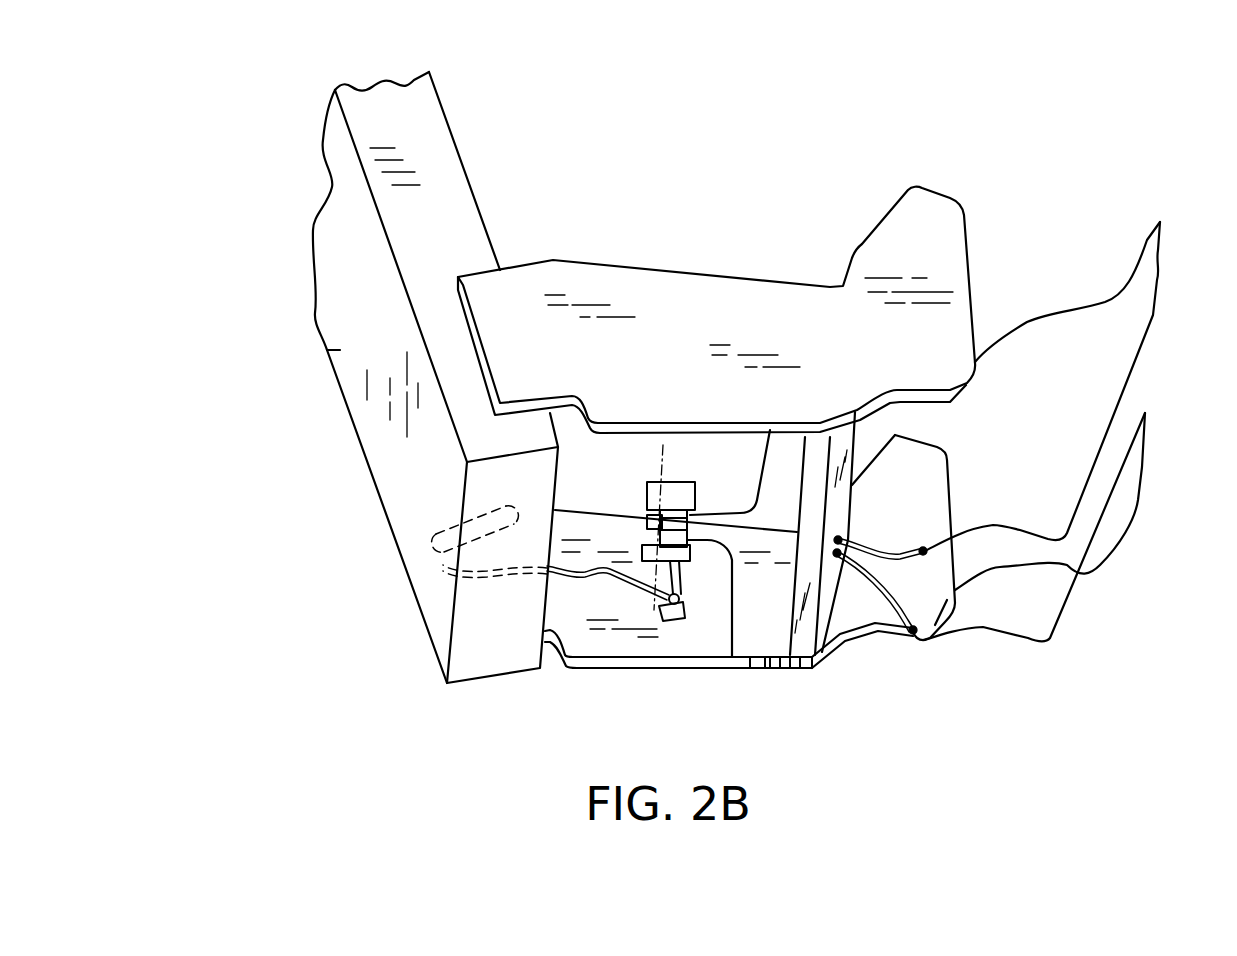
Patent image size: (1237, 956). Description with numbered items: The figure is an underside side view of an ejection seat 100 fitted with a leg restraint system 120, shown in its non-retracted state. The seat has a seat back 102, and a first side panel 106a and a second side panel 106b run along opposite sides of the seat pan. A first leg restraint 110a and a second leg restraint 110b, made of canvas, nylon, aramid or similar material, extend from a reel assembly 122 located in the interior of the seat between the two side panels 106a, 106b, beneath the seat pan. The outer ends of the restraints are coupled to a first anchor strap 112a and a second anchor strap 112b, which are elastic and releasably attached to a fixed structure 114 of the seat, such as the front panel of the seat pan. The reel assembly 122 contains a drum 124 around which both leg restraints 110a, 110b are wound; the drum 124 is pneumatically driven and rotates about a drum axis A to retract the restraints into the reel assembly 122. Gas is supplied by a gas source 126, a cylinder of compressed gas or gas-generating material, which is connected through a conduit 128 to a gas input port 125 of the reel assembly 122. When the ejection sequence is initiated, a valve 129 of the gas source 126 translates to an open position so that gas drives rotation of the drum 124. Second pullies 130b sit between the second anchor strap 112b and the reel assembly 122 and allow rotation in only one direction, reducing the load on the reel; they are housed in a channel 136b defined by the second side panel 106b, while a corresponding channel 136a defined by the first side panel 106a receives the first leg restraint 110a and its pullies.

The ejection seat 100 is at (266, 126).
The seat back 102 is at (340, 350).
The first side panel 106a is at (757, 305).
The second side panel 106b is at (612, 640).
The first leg restraint 110a is at (1158, 268).
The second leg restraint 110b is at (1142, 470).
The first anchor strap 112a is at (858, 546).
The second anchor strap 112b is at (913, 634).
The fixed structure 114 is at (827, 590).
The leg restraint system 120 is at (1102, 178).
The reel assembly 122 is at (679, 468).
The drum 124 is at (656, 525).
The gas input port 125 is at (682, 600).
The gas source 126 is at (455, 532).
The conduit 128 is at (578, 577).
The valve 129 is at (435, 550).
The second pullies 130b is at (789, 662).
The channel 136a is at (823, 431).
The channel 136b is at (679, 661).
The drum axis A is at (660, 478).